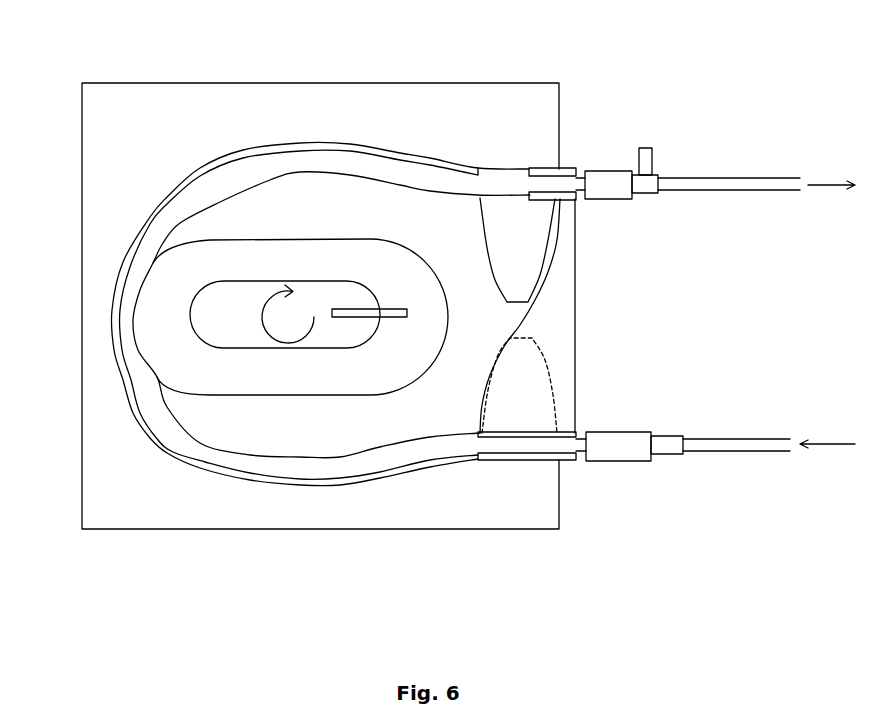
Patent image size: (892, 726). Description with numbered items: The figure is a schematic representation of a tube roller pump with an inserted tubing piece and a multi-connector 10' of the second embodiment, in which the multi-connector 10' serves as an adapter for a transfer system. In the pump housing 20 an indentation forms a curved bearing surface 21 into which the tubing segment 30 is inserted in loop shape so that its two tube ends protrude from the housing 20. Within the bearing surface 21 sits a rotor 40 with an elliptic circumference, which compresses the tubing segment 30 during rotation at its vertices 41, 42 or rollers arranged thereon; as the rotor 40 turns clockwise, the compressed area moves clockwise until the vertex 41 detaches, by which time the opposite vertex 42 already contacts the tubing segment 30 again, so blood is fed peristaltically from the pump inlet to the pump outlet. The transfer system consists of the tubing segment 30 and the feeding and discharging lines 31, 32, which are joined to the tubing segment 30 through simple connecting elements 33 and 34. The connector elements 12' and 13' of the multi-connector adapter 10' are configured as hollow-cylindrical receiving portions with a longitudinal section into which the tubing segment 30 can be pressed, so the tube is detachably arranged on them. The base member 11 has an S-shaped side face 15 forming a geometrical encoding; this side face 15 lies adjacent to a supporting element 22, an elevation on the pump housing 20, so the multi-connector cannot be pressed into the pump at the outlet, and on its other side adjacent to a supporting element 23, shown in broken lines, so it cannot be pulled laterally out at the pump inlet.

The multi-connector 10' is at (553, 315).
The base member 11 is at (568, 352).
The connector element 12' is at (539, 151).
The connector element 13' is at (527, 476).
The side face 15 is at (480, 404).
The pump housing 20 is at (395, 92).
The bearing surface 21 is at (130, 224).
The supporting element 22 is at (487, 247).
The supporting element 23 is at (528, 374).
The tubing segment 30 is at (310, 293).
The feeding line 31 is at (752, 452).
The discharging line 32 is at (742, 184).
The connecting element 33 is at (612, 198).
The connecting element 34 is at (643, 436).
The rotor 40 is at (307, 380).
The vertex 41 is at (143, 322).
The vertex 42 is at (448, 318).